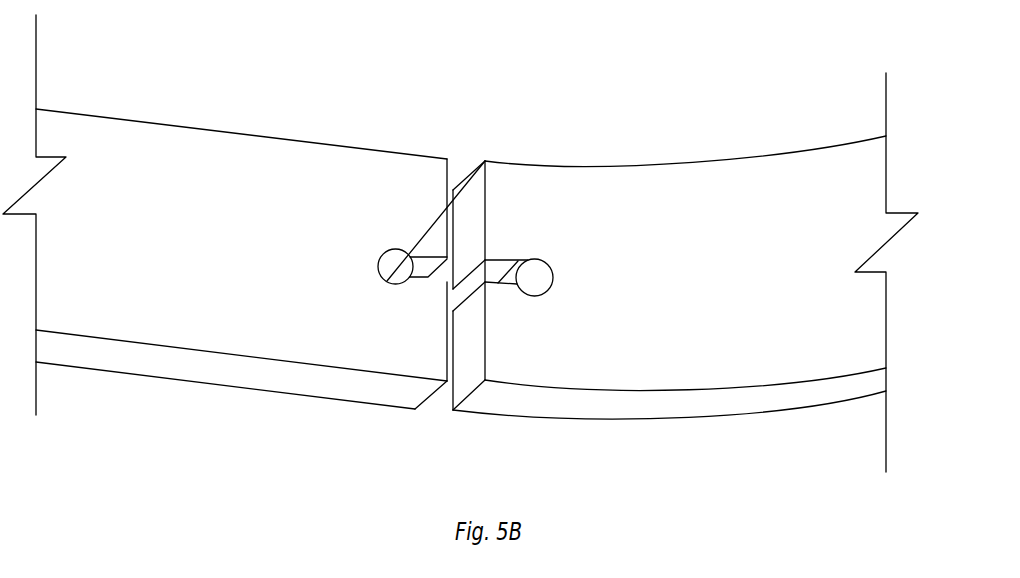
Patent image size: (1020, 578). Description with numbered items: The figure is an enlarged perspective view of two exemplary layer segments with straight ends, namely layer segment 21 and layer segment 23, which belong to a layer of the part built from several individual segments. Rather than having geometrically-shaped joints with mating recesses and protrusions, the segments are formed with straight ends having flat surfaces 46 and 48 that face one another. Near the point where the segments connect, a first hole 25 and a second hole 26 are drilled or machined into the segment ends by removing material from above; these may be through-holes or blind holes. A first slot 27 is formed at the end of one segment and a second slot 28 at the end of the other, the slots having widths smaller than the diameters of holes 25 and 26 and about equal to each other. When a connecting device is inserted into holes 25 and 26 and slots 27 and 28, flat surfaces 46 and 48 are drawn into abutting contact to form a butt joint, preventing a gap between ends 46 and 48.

The layer segment 21 is at (243, 203).
The layer segment 23 is at (805, 217).
The first hole 25 is at (390, 267).
The second hole 26 is at (538, 267).
The first slot 27 is at (486, 161).
The second slot 28 is at (498, 272).
The flat surface 46 is at (448, 362).
The flat surface 48 is at (470, 378).